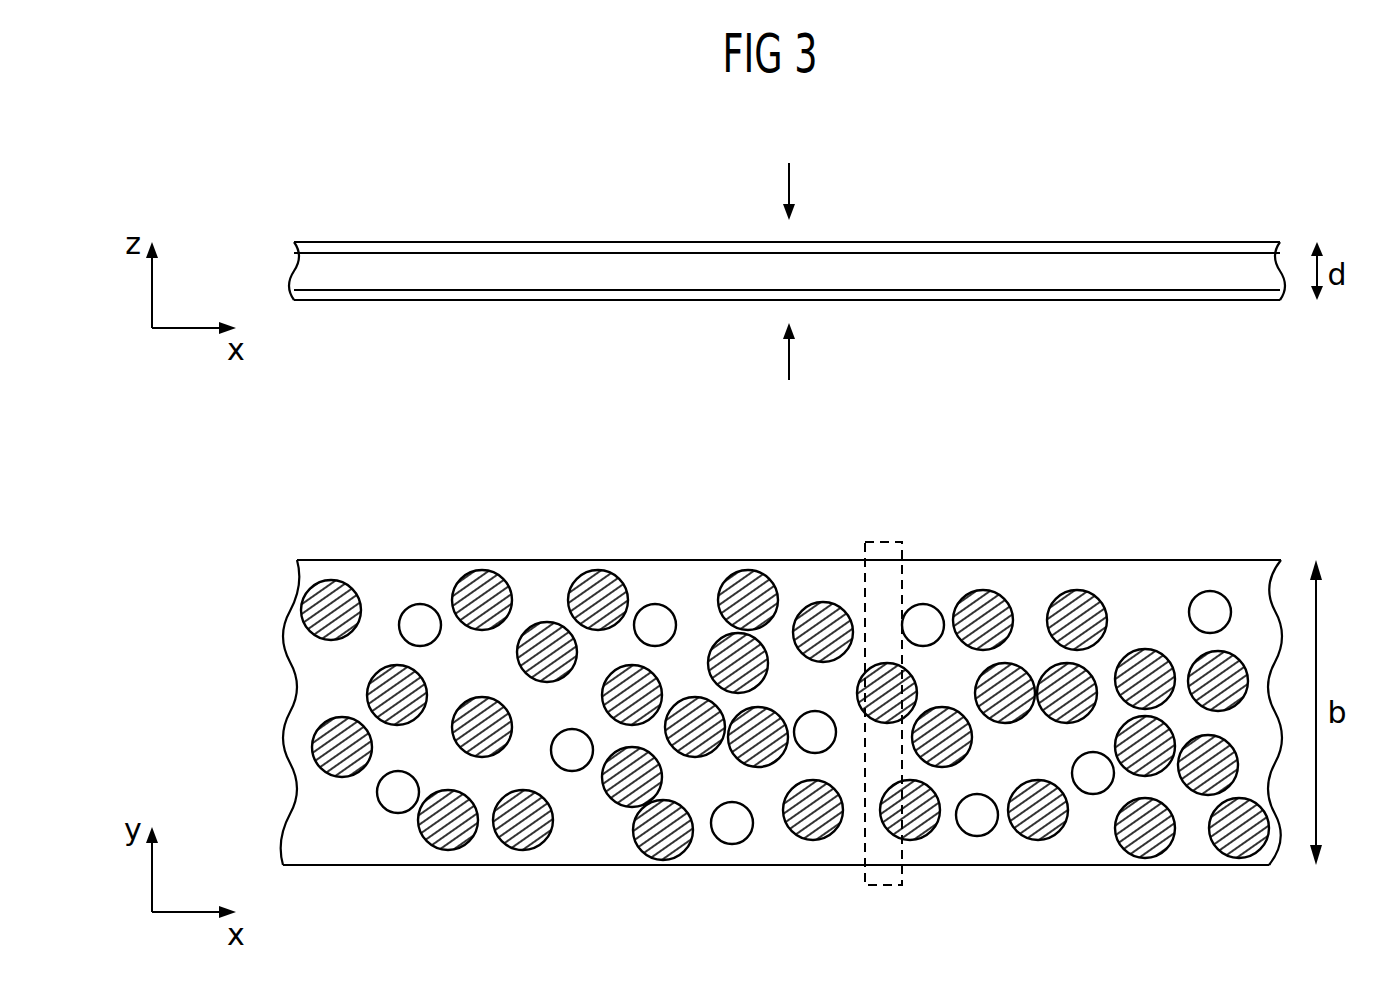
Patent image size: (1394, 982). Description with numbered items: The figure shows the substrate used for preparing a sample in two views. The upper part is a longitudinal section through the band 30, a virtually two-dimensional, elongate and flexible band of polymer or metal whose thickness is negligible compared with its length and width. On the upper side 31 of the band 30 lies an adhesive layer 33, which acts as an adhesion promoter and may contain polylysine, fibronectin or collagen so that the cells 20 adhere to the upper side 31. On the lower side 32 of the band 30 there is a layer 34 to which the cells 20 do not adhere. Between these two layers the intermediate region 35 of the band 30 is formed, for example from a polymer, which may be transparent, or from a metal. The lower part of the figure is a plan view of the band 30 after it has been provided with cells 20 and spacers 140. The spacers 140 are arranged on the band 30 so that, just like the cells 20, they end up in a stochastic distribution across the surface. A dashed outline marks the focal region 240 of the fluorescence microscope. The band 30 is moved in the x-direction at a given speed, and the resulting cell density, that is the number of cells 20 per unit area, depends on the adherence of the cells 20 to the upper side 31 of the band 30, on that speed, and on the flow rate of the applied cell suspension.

The cells 20 is at (483, 585).
The band 30 is at (1188, 170).
The upper side 31 is at (789, 178).
The lower side 32 is at (789, 368).
The adhesive layer 33 is at (530, 247).
The layer 34 is at (523, 295).
The intermediate region 35 is at (636, 277).
The spacers 140 is at (396, 800).
The focal region 240 is at (886, 540).